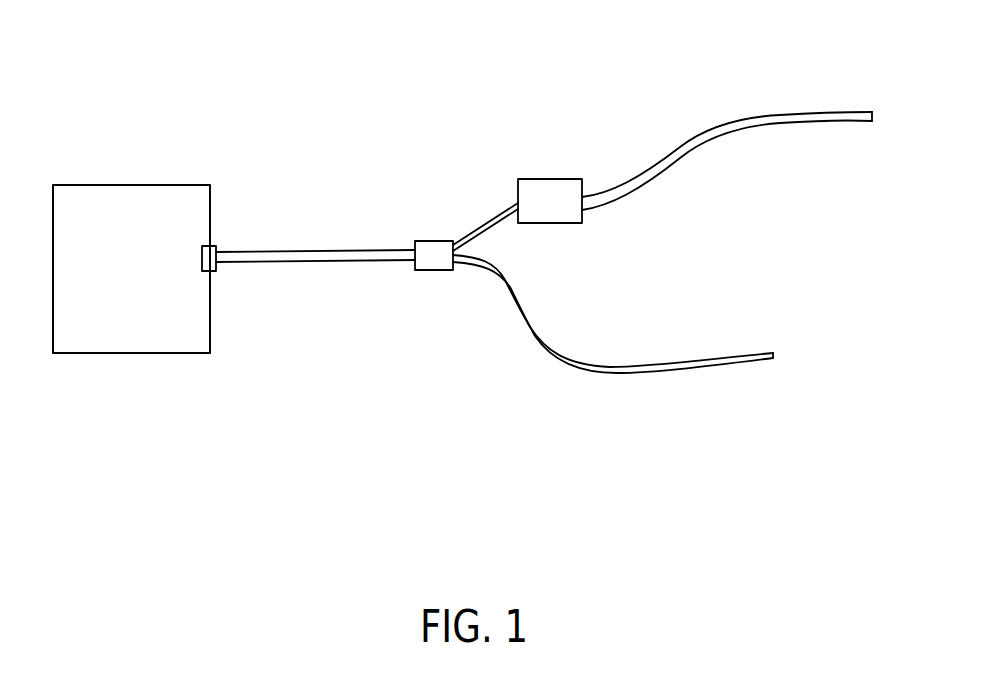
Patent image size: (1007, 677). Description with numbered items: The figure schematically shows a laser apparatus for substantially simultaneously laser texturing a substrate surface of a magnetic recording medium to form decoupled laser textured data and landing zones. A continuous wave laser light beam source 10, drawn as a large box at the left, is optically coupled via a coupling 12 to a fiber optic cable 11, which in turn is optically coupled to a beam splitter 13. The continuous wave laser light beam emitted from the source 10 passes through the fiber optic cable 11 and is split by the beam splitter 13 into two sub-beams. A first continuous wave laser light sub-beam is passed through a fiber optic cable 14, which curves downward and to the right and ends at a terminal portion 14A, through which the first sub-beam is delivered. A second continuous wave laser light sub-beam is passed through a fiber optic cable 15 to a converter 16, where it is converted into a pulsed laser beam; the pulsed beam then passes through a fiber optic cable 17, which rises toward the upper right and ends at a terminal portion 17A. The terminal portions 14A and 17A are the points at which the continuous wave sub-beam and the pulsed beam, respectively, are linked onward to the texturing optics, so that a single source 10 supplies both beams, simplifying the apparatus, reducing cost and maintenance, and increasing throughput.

The continuous wave laser light beam source 10 is at (125, 353).
The fiber optic cable 11 is at (306, 250).
The optical coupling 12 is at (210, 246).
The beam splitter 13 is at (430, 241).
The fiber optic cable 14 is at (627, 373).
The terminal portion of fiber optic cable 14A is at (775, 358).
The fiber optic cable 15 is at (490, 218).
The converter 16 is at (565, 179).
The fiber optic cable 17 is at (735, 130).
The terminal portion of fiber optic cable 17A is at (875, 112).